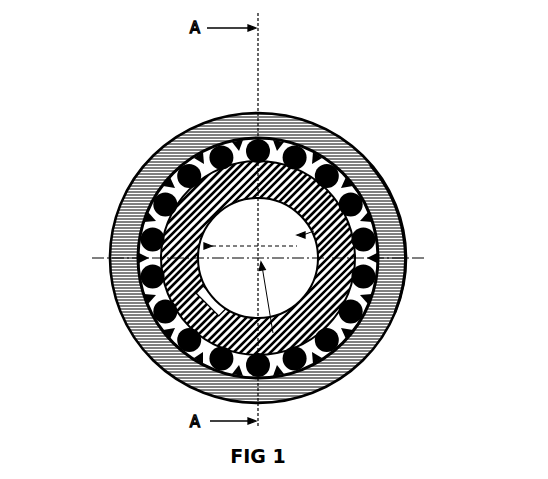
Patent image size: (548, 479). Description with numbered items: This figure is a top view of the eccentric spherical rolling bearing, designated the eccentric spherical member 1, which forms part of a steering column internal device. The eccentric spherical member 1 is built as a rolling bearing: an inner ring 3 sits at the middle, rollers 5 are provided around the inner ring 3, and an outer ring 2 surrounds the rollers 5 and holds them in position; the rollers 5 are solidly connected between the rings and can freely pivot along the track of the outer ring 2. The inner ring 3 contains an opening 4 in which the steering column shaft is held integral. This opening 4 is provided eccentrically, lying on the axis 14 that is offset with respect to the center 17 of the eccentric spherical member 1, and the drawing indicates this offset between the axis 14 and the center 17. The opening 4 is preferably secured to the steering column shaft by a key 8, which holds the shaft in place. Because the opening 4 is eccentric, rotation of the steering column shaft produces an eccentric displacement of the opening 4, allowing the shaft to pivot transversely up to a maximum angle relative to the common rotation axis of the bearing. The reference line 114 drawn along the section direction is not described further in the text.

The bearing assembly 1 is at (118, 143).
The outer ring 2 is at (229, 108).
The raceway 3 is at (370, 163).
The rolling elements 4 is at (396, 314).
The outer surface 5 is at (401, 210).
The inner ring 8 is at (130, 322).
The bore 14 is at (205, 246).
The cage 17 is at (330, 390).
The axis 114 is at (264, 98).